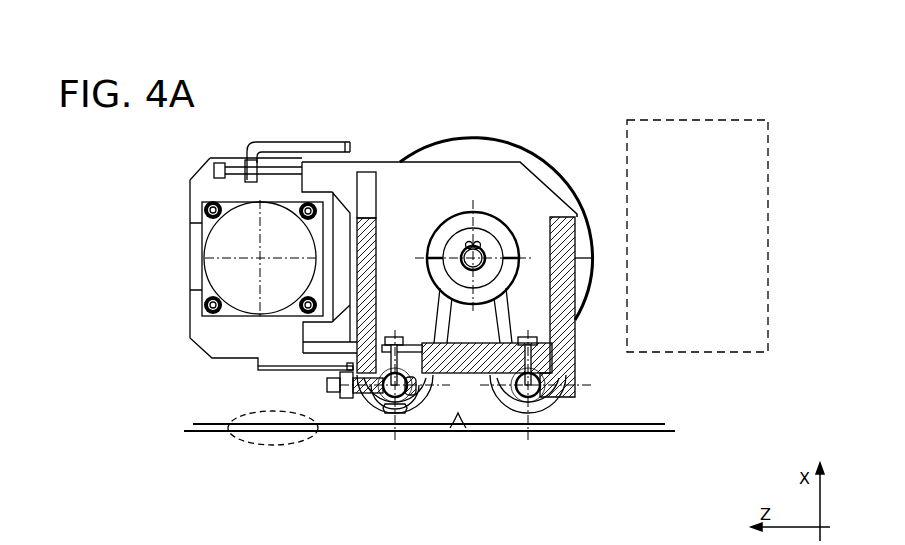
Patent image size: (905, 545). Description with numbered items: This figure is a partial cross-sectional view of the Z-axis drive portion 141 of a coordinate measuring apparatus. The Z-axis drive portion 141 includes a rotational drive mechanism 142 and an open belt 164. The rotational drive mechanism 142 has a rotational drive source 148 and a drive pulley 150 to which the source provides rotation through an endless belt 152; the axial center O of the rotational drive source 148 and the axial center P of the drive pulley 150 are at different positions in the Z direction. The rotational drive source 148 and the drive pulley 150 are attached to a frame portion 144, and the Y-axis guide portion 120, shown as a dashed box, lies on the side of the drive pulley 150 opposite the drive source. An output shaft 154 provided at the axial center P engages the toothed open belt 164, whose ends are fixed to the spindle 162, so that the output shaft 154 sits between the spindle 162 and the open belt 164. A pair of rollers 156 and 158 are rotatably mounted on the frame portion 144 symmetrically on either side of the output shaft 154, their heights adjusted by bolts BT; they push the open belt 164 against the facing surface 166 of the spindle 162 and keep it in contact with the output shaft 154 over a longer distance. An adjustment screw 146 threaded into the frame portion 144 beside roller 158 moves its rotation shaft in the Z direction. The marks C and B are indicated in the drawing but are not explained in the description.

The Y-axis guide portion 120 is at (691, 165).
The Z-axis drive portion 141 is at (534, 107).
The rotational drive mechanism 142 is at (460, 126).
The frame portion 144 is at (574, 373).
The adjustment screw 146 is at (327, 382).
The rotational drive source 148 is at (270, 254).
The drive pulley 150 is at (537, 172).
The endless belt 152 is at (400, 162).
The output shaft 154 is at (463, 270).
The roller 156 is at (519, 412).
The roller 158 is at (396, 436).
The spindle 162 is at (599, 466).
The open belt 164 is at (642, 424).
The facing surface 166 is at (449, 429).
The axial center of drive pulley P is at (470, 256).
The axial center of rotational drive source O is at (262, 257).
The rotation direction C is at (428, 278).
The bolts BT is at (400, 338).
The region B is at (252, 442).